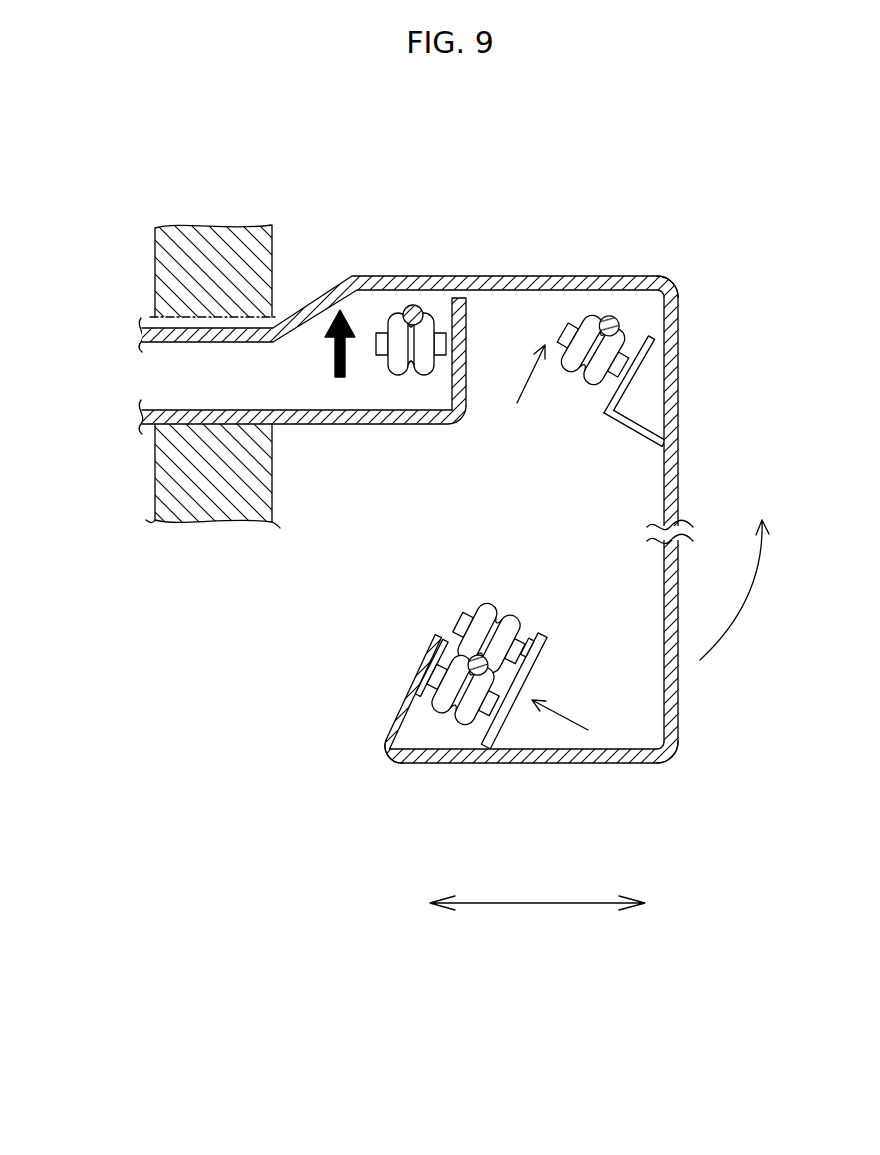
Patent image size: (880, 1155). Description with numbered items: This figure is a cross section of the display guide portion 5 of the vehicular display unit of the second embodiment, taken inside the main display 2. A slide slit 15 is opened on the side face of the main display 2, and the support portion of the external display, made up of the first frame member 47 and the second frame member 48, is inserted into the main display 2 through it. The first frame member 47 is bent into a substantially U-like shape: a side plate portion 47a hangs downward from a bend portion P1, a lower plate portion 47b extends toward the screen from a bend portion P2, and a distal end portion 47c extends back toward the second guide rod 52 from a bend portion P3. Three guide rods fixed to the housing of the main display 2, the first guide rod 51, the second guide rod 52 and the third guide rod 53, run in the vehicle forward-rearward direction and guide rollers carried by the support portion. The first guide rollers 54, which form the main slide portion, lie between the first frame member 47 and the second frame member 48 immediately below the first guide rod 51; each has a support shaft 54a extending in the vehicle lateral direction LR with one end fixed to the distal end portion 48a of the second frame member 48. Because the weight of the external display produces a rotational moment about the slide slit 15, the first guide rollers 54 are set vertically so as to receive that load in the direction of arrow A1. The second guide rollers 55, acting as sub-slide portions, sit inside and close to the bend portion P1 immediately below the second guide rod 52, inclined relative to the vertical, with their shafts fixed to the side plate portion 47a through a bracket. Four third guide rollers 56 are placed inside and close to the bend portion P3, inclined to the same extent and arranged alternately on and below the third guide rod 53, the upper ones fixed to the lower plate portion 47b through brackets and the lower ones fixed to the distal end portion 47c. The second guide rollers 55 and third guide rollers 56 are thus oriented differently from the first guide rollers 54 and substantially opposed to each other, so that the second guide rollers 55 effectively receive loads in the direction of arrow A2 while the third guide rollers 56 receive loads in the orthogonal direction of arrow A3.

The main display 2 is at (214, 206).
The display guide portion 5 is at (348, 553).
The slide slit 15 is at (163, 443).
The first frame member 47 is at (318, 290).
The side plate portion 47a is at (680, 470).
The lower plate portion 47b is at (524, 765).
The distal end portion 47c is at (393, 706).
The second frame member 48 is at (324, 426).
The distal end portion 48a is at (463, 372).
The first guide rod 51 is at (413, 306).
The second guide rod 52 is at (620, 316).
The third guide rod 53 is at (475, 653).
The first guide rollers 54 is at (397, 318).
The support shaft 54a is at (446, 333).
The second guide rollers 55 is at (562, 373).
The third guide rollers 56 is at (490, 606).
The arrow A1 is at (330, 353).
The arrow A2 is at (515, 407).
The arrow A3 is at (578, 712).
The bend portion P1 is at (684, 284).
The bend portion P2 is at (672, 765).
The bend portion P3 is at (383, 760).
The vehicle lateral direction LR is at (543, 906).